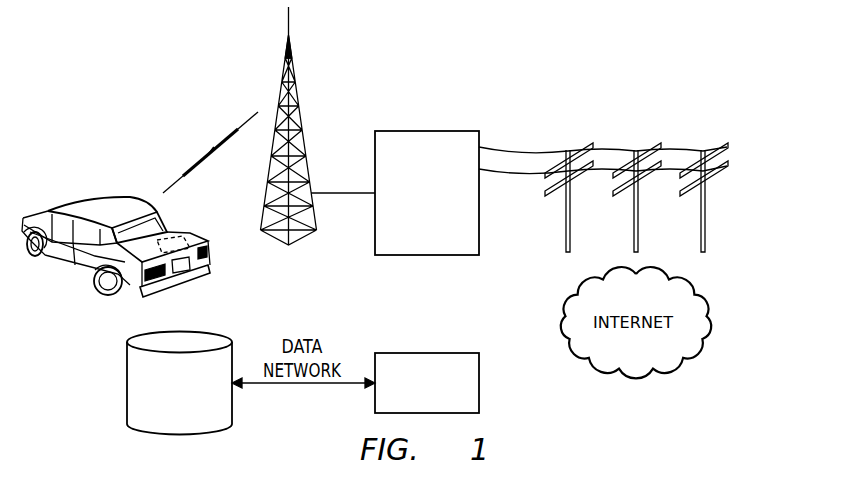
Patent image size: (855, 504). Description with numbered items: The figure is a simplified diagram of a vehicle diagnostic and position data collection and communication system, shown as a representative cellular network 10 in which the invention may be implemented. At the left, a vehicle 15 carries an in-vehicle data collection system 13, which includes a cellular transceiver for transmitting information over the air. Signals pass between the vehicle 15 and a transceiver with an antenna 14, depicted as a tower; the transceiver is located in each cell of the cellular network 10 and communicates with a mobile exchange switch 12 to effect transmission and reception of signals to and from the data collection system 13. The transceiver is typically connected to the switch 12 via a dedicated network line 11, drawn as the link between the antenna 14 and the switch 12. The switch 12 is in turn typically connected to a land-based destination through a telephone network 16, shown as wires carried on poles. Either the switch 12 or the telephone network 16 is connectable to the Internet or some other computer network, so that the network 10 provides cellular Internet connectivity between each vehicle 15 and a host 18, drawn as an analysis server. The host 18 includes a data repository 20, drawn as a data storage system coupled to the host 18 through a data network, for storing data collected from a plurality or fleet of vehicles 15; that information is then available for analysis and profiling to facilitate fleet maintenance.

The cellular network 10 is at (763, 237).
The dedicated network line 11 is at (340, 193).
The mobile exchange switch 12 is at (428, 131).
The data collection system 13 is at (186, 231).
The antenna 14 is at (285, 53).
The vehicle 15 is at (100, 200).
The telephone network 16 is at (533, 148).
The host 18 is at (479, 385).
The data repository 20 is at (125, 383).